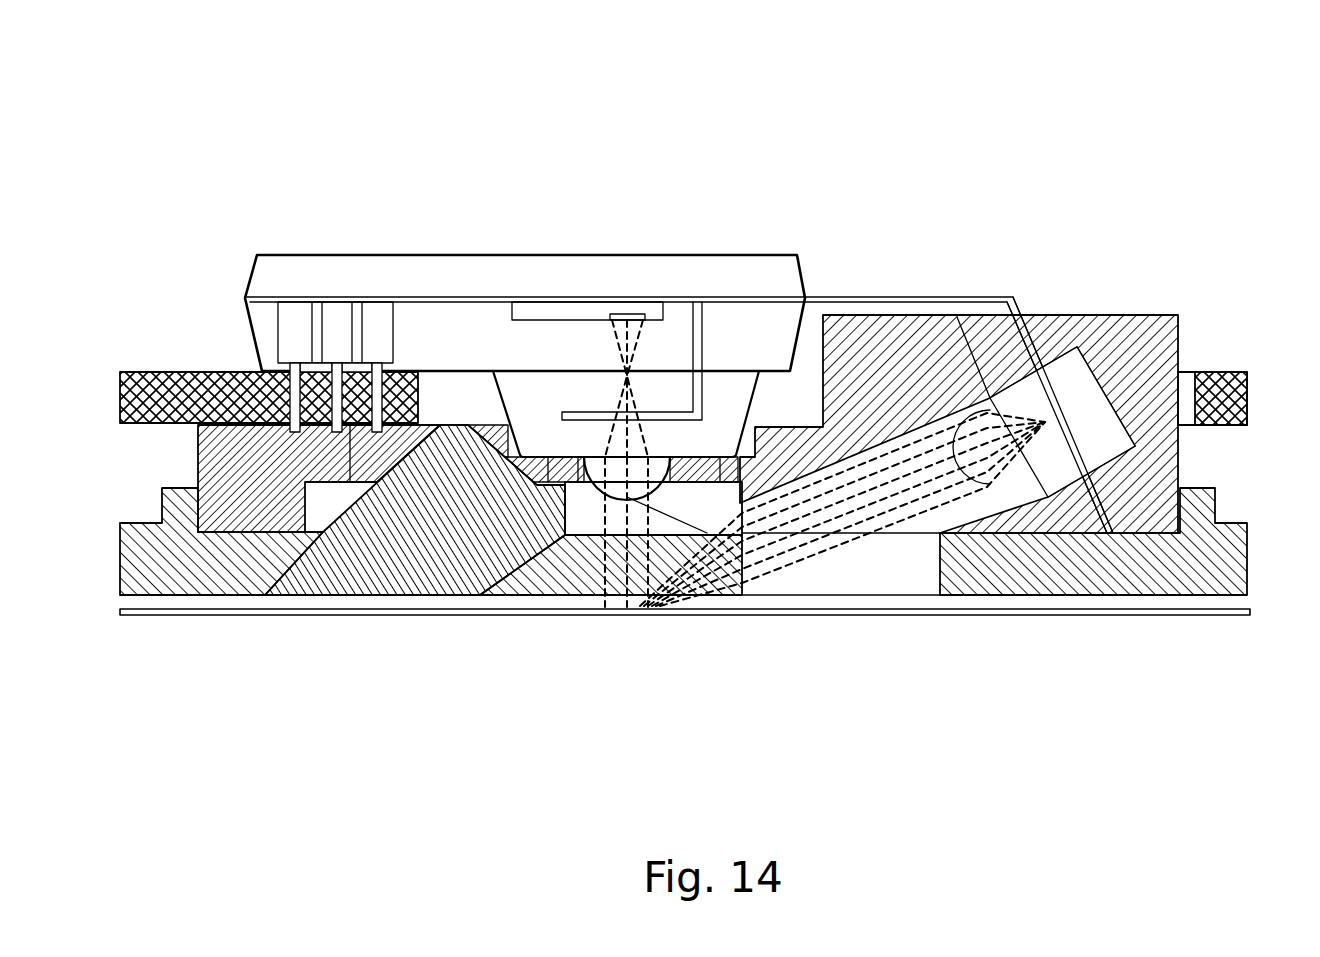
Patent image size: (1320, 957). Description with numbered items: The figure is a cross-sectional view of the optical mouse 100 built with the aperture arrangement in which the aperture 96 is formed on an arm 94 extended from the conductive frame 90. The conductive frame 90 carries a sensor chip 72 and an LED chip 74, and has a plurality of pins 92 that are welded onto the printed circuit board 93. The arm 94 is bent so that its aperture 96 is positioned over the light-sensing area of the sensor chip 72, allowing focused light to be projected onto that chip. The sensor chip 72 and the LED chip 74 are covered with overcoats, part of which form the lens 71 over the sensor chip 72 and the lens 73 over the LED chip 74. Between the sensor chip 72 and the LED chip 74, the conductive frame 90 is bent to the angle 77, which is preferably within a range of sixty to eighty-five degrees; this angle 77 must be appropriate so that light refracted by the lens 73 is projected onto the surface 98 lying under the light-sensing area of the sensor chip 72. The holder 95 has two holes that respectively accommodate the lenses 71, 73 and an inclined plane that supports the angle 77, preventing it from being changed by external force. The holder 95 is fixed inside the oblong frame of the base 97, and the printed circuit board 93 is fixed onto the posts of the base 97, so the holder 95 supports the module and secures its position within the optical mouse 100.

The optical mouse 100 is at (1160, 145).
The lens 71 is at (603, 468).
The sensor chip 72 is at (520, 312).
The lens 73 is at (1030, 490).
The LED chip 74 is at (1045, 400).
The angle 77 is at (963, 305).
The conductive frame 90 is at (818, 298).
The pins 92 is at (295, 322).
The printed circuit board 93 is at (1247, 397).
The arm 94 is at (700, 333).
The holder 95 is at (1090, 315).
The aperture 96 is at (620, 413).
The base 97 is at (1233, 558).
The surface 98 is at (1172, 616).